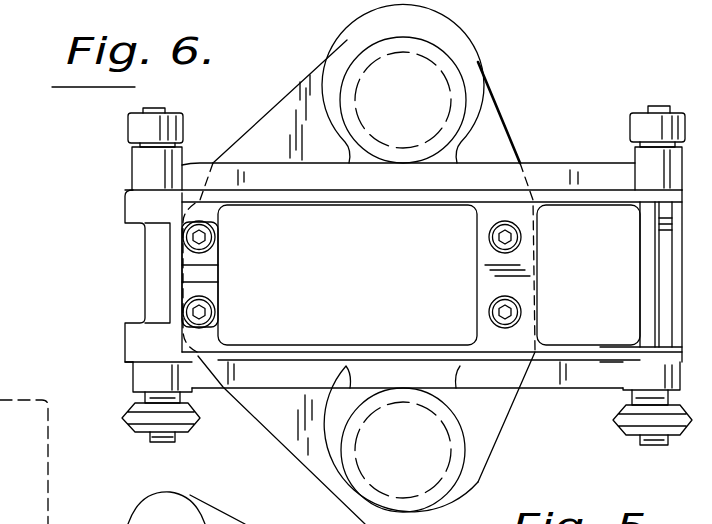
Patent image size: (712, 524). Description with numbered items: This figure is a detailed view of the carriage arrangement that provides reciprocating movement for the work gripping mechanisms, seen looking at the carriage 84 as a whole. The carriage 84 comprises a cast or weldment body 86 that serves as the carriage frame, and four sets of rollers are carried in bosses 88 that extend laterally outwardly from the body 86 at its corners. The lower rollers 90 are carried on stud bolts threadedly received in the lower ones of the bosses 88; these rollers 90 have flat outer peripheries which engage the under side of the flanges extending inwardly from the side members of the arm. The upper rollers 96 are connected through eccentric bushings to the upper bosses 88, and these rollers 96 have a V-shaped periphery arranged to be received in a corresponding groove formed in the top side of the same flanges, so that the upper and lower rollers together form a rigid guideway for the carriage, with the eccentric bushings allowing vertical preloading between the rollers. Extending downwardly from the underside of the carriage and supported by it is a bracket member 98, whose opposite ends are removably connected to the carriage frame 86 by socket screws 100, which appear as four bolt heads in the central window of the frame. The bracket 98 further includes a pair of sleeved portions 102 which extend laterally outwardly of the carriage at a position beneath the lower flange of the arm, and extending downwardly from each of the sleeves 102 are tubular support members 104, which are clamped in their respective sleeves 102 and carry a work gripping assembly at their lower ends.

The carriage 84 is at (355, 294).
The body 86 is at (540, 388).
The bosses 88 is at (132, 162).
The lower rollers 90 is at (184, 128).
The upper rollers 96 is at (195, 432).
The bracket member 98 is at (300, 470).
The socket screws 100 is at (212, 240).
The sleeved portions 102 is at (486, 70).
The tubular support members 104 is at (455, 114).